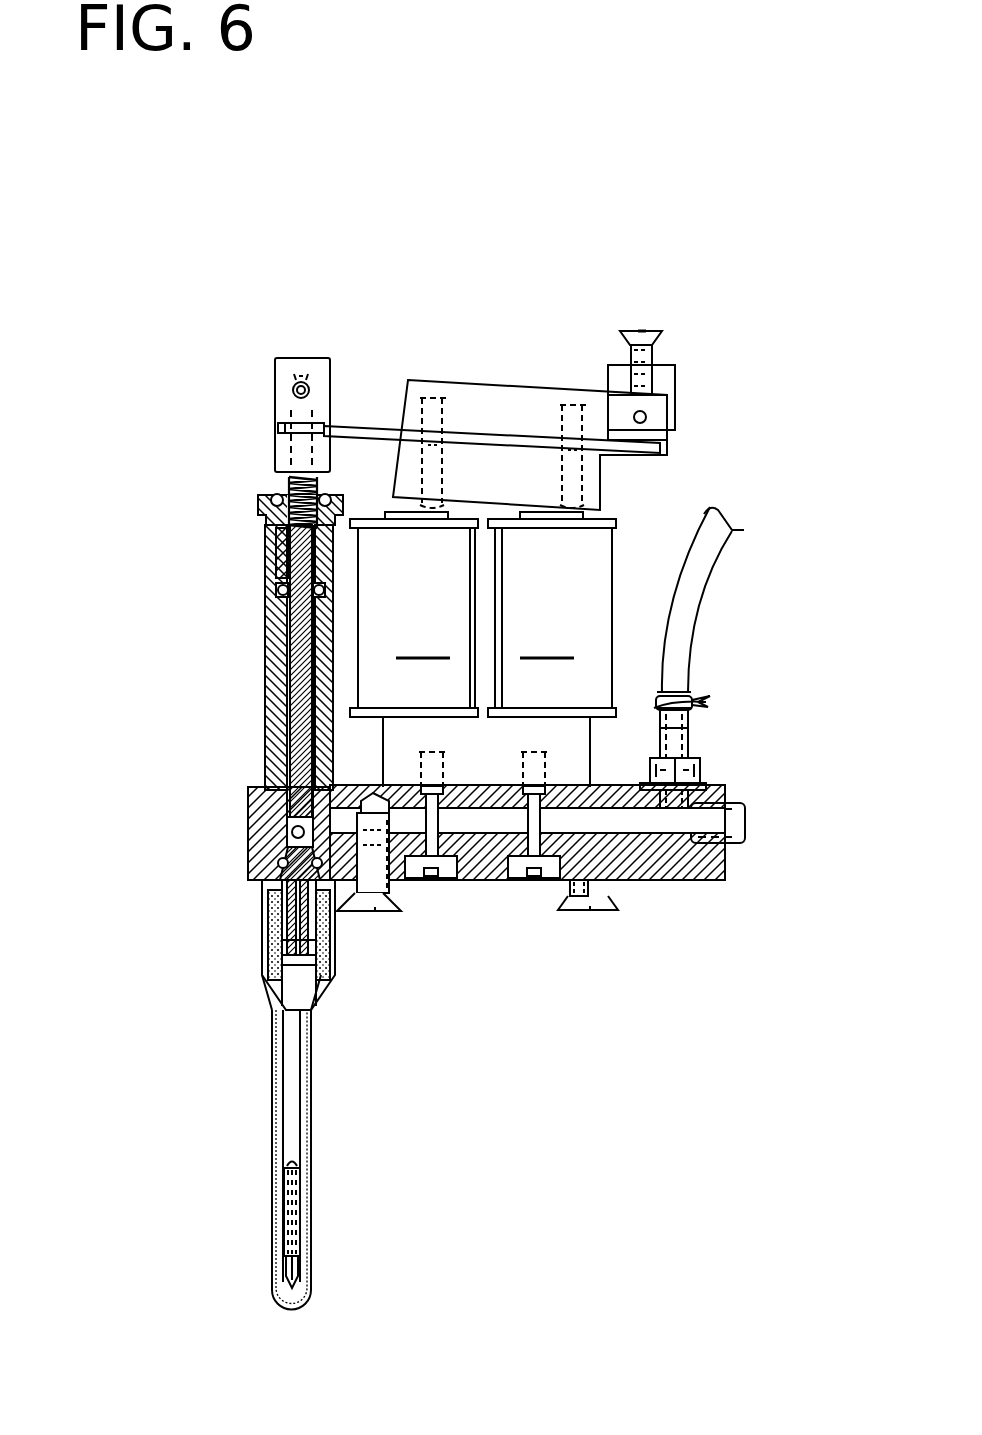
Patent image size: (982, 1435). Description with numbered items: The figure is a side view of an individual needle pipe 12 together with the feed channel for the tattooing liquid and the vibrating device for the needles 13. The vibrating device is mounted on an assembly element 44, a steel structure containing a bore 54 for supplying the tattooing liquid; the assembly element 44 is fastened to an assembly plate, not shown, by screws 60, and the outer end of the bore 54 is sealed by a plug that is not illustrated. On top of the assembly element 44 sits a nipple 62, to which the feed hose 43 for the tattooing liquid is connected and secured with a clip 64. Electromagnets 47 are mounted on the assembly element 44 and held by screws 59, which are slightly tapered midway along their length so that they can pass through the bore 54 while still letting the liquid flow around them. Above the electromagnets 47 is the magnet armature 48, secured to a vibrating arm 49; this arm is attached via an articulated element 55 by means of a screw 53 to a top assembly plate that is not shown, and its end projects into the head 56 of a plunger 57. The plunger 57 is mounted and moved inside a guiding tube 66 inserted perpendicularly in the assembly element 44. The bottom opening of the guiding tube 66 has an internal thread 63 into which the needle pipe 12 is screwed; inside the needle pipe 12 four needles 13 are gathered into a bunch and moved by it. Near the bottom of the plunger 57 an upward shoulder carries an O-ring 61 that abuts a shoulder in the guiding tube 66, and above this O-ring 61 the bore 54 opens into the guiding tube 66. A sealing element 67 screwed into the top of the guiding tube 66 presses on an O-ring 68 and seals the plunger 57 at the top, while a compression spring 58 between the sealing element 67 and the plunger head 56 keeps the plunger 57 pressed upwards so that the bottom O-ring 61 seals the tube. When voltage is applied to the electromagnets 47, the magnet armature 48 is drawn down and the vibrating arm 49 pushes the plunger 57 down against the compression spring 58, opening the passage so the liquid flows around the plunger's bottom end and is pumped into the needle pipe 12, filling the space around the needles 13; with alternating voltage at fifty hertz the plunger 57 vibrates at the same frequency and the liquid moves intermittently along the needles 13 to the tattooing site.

The needle pipe 12 is at (273, 1085).
The needles 13 is at (285, 1172).
The feed hose 43 is at (708, 555).
The assembly element 44 is at (713, 865).
The electromagnets 47 is at (483, 649).
The magnet armature 48 is at (467, 394).
The vibrating arm 49 is at (380, 428).
The screw 53 is at (642, 338).
The bore (feed channel) 54 is at (605, 820).
The articulated element 55 is at (674, 377).
The head of plunger 56 is at (277, 396).
The plunger 57 is at (299, 690).
The compression spring 58 is at (285, 480).
The screws 59 is at (446, 872).
The screws 60 is at (365, 920).
The O-ring 61 is at (272, 863).
The nipple 62 is at (683, 733).
The internal thread 63 is at (264, 895).
The clip 64 is at (705, 695).
The guiding tube 66 is at (269, 714).
The sealing element 67 is at (283, 552).
The O-ring 68 is at (282, 598).